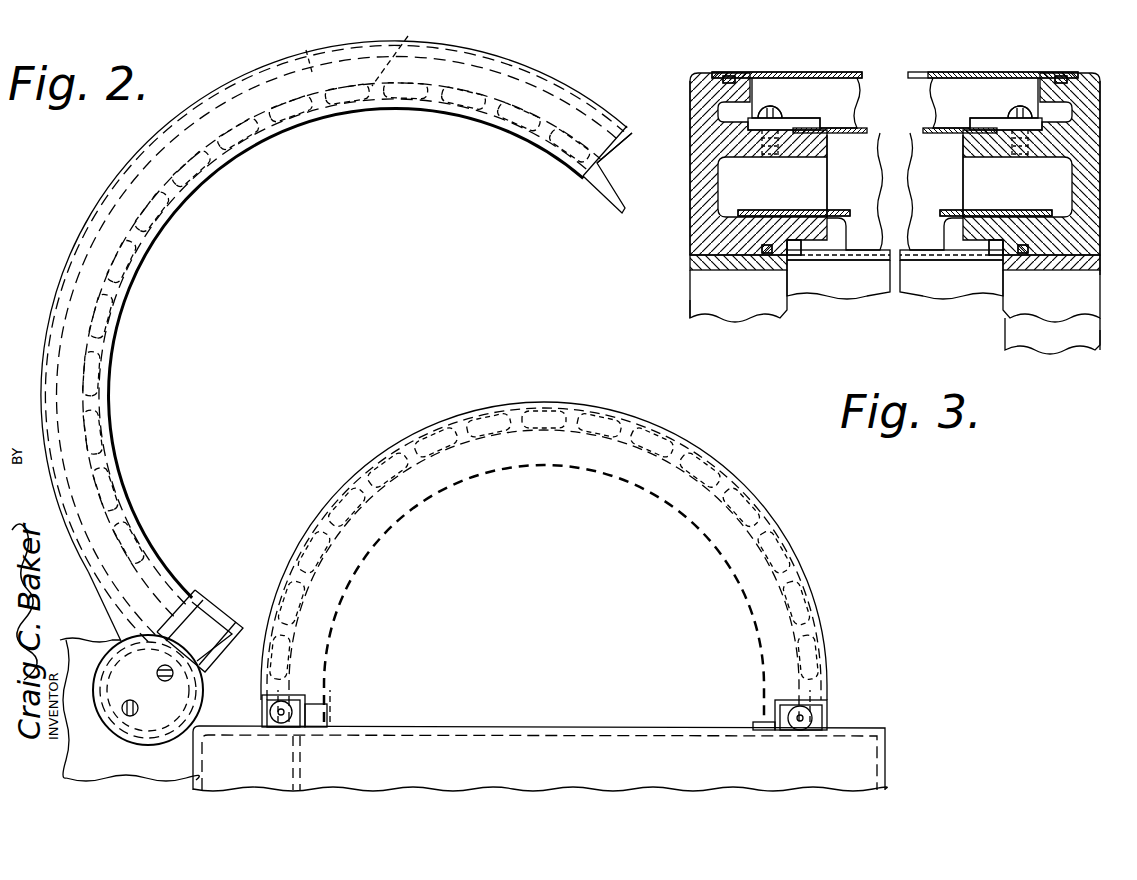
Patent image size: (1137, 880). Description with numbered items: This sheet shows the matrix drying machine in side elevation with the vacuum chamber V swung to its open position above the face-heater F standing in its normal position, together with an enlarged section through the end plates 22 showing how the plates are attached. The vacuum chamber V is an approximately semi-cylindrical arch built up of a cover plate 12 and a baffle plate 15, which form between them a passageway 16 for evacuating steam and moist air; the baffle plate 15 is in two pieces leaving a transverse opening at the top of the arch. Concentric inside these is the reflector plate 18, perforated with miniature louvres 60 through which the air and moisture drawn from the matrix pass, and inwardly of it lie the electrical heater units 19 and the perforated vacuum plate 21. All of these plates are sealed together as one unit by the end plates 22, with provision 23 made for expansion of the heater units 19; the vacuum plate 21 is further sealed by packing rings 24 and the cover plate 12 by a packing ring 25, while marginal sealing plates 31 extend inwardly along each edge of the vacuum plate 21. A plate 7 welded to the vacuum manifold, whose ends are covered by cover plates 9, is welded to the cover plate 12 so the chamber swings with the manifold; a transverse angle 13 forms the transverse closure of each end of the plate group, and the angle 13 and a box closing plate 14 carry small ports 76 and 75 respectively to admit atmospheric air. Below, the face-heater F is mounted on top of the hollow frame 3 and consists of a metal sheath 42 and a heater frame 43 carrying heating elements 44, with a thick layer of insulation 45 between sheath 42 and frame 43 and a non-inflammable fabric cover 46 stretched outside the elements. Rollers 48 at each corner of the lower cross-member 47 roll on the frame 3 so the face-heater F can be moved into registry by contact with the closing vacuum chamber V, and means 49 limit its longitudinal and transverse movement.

In FIG. 2, the hollow frame 3 is at (236, 736).
In FIG. 2, the plate 7 is at (117, 621).
In FIG. 2, the cover plates 9 is at (168, 745).
In FIG. 2, the cover plate 12 is at (158, 138).
In FIG. 3, the cover plate 12 is at (830, 72).
In FIG. 2, the transverse angle 13 is at (612, 162).
In FIG. 2, the box closing plate 14 is at (218, 645).
In FIG. 2, the baffle plate 15 is at (254, 82).
In FIG. 3, the baffle plate 15 is at (826, 128).
In FIG. 2, the passageway 16 is at (52, 300).
In FIG. 2, the reflector plate 18 is at (118, 250).
In FIG. 3, the reflector plate 18 is at (752, 210).
In FIG. 2, the electrical heater units 19 is at (153, 228).
In FIG. 3, the electrical heater units 19 is at (868, 214).
In FIG. 2, the perforated vacuum plate 21 is at (125, 476).
In FIG. 3, the perforated vacuum plate 21 is at (852, 262).
In FIG. 3, the end plates 22 is at (690, 243).
In FIG. 3, the expansion provision 23 is at (796, 258).
In FIG. 3, the packing rings 24 is at (766, 256).
In FIG. 3, the packing ring 25 is at (736, 76).
In FIG. 3, the marginal sealing plates 31 is at (690, 293).
In FIG. 2, the metal sheath 42 is at (740, 580).
In FIG. 2, the heater frame 43 is at (386, 470).
In FIG. 2, the heating elements 44 is at (478, 422).
In FIG. 2, the insulation 45 is at (560, 462).
In FIG. 2, the cover 46 is at (766, 510).
In FIG. 2, the lower cross-member 47 is at (399, 692).
In FIG. 2, the rollers 48 is at (283, 708).
In FIG. 2, the limiting means 49 is at (322, 707).
In FIG. 2, the miniature louvres 60 is at (403, 49).
In FIG. 2, the small port 75 is at (209, 631).
In FIG. 2, the small port 76 is at (603, 150).
In FIG. 2, the face-heater F is at (778, 606).
In FIG. 2, the vacuum chamber V is at (304, 49).